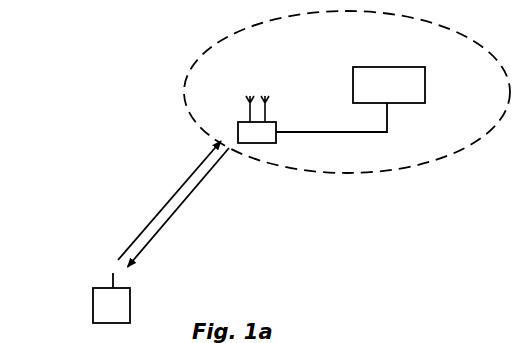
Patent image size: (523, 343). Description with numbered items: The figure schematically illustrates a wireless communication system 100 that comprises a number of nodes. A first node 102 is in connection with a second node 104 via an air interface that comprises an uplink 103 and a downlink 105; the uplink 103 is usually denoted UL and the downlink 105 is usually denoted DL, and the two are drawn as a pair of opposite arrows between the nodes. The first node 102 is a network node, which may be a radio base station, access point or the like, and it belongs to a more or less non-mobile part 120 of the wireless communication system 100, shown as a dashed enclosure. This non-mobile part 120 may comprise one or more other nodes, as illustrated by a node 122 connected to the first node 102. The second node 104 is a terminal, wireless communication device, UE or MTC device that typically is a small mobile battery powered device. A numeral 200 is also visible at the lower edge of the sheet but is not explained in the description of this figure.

The wireless communication system 100 is at (110, 84).
The first node 102 is at (276, 122).
The uplink 103 is at (187, 180).
The second node 104 is at (93, 308).
The downlink 105 is at (174, 214).
The non-mobile part 120 is at (429, 160).
The node 122 is at (425, 88).
The system (label from adjacent figure, partially visible) 200 is at (441, 335).